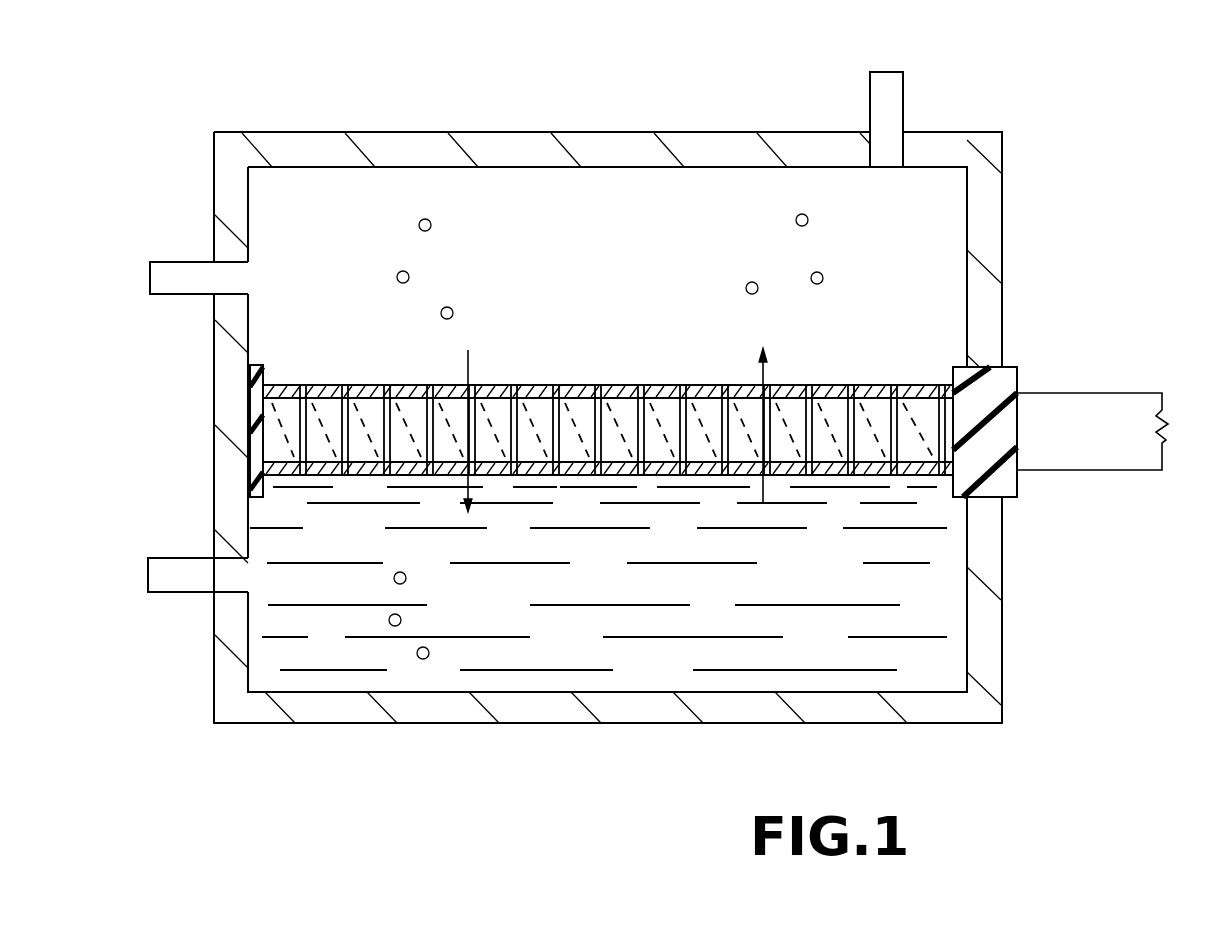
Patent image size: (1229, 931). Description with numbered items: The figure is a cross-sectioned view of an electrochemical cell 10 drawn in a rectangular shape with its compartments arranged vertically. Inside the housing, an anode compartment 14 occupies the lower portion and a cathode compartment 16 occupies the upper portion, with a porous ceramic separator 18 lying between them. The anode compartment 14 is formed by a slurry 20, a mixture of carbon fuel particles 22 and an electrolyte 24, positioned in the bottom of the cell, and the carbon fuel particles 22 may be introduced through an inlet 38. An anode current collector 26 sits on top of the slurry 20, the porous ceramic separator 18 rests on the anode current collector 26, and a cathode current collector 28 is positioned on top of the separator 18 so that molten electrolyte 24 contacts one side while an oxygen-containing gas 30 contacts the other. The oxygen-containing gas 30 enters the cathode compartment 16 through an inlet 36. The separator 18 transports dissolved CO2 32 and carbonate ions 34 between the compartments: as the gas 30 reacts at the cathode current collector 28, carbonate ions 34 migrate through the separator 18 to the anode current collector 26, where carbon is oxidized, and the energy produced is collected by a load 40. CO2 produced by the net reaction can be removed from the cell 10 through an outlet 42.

The electrochemical cell 10 is at (1047, 107).
The anode compartment 14 is at (1017, 517).
The cathode compartment 16 is at (1012, 178).
The porous ceramic separator 18 is at (575, 420).
The slurry 20 is at (833, 585).
The carbon fuel particles 22 is at (406, 578).
The electrolyte 24 is at (630, 637).
The anode current collector 26 is at (365, 476).
The cathode current collector 28 is at (360, 385).
The oxygen-containing gas 30 is at (430, 230).
The dissolved CO2 32 is at (766, 372).
The carbonate ions 34 is at (471, 368).
The inlet 36 is at (188, 262).
The inlet 38 is at (186, 558).
The load 40 is at (1160, 408).
The outlet 42 is at (903, 107).